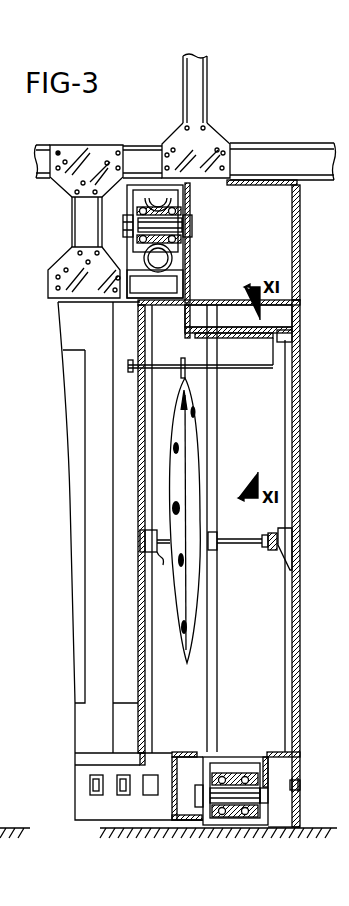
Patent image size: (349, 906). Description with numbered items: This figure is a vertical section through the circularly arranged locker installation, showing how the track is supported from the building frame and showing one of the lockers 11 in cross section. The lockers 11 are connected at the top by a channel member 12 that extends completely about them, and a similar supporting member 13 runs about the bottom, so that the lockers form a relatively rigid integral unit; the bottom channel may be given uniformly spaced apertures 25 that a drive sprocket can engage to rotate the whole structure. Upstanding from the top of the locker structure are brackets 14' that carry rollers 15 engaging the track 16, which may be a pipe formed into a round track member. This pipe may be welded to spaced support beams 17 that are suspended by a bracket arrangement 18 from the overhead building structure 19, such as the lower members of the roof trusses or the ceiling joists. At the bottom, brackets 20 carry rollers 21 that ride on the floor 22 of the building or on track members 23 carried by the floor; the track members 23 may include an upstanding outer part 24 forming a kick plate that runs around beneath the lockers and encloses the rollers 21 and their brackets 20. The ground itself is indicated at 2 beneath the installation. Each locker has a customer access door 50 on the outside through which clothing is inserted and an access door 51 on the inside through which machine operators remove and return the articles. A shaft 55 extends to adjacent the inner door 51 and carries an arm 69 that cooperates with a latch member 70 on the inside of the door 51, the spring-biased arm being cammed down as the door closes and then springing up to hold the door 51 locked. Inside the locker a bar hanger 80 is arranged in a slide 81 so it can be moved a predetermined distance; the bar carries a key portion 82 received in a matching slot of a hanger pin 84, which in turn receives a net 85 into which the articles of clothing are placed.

The floor 2 is at (337, 828).
The lockers 11 is at (320, 401).
The channel member 12 is at (192, 287).
The supporting member 13 is at (192, 752).
The brackets 14' is at (207, 225).
The rollers 15 is at (143, 196).
The track 16 is at (120, 288).
The support beams 17 is at (143, 287).
The bracket arrangement 18 is at (72, 270).
The overhead building structure 19 is at (50, 153).
The brackets 20 is at (268, 775).
The rollers 21 is at (190, 824).
The floor 22 is at (38, 826).
The track members 23 is at (268, 821).
The upstanding outer part 24 is at (0, 778).
The apertures 25 is at (96, 779).
The customer access doors 50 is at (300, 455).
The access door 51 is at (108, 612).
The shaft 55 is at (245, 548).
The arm 69 is at (163, 552).
The latch member 70 is at (148, 530).
The bar hanger 80 is at (239, 370).
The slide 81 is at (292, 340).
The key portion 82 is at (130, 361).
The hanger pin 84 is at (186, 378).
The net 85 is at (187, 665).